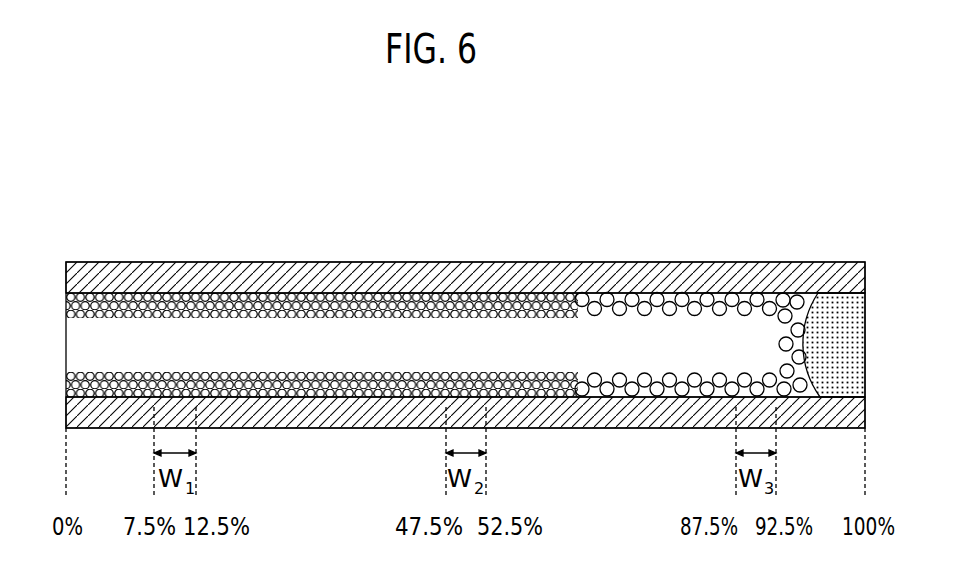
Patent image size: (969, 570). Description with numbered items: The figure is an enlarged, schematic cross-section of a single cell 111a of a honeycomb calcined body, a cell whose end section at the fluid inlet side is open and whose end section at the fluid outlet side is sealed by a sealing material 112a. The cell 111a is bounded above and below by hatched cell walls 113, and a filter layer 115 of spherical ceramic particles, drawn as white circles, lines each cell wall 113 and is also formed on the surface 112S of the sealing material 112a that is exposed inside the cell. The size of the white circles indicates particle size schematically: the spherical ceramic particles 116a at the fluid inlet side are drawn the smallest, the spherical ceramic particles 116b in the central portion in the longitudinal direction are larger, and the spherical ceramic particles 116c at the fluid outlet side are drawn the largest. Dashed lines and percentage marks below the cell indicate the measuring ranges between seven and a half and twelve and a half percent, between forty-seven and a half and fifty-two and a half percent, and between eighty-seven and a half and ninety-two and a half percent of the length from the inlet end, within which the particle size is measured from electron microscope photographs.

The cell 111a is at (128, 328).
The cell wall 113 is at (362, 272).
The filter layer 115 is at (642, 297).
The surface of the sealing material 112S is at (782, 325).
The sealing material 112a is at (842, 320).
The spherical ceramic particles at the fluid inlet side 116a is at (143, 395).
The spherical ceramic particles in the central portion 116b is at (388, 388).
The spherical ceramic particles at the fluid outlet side 116c is at (613, 388).